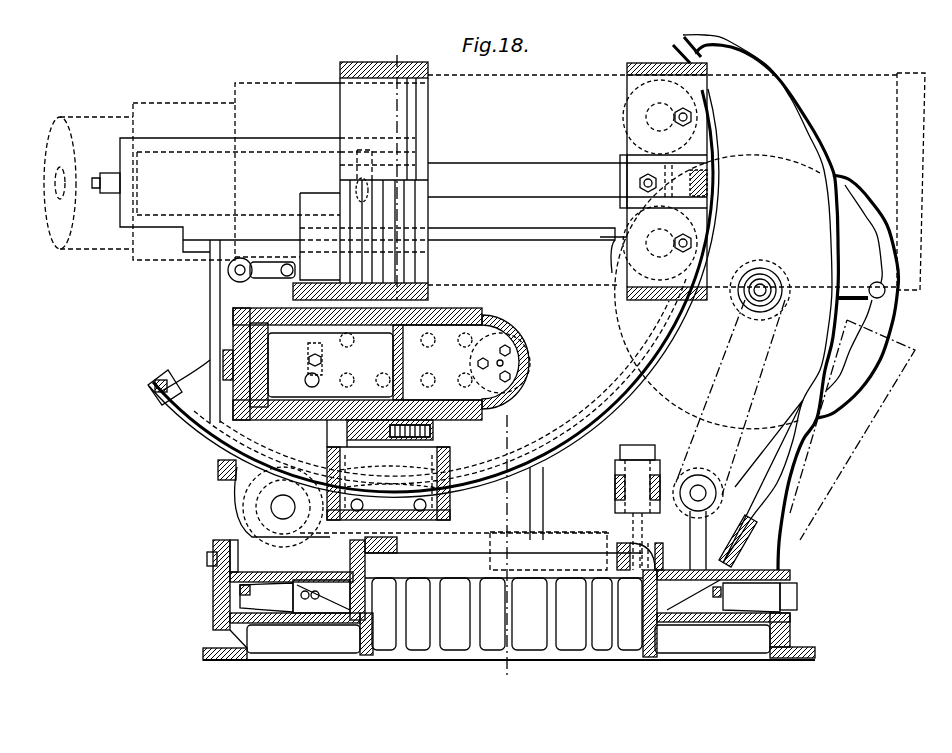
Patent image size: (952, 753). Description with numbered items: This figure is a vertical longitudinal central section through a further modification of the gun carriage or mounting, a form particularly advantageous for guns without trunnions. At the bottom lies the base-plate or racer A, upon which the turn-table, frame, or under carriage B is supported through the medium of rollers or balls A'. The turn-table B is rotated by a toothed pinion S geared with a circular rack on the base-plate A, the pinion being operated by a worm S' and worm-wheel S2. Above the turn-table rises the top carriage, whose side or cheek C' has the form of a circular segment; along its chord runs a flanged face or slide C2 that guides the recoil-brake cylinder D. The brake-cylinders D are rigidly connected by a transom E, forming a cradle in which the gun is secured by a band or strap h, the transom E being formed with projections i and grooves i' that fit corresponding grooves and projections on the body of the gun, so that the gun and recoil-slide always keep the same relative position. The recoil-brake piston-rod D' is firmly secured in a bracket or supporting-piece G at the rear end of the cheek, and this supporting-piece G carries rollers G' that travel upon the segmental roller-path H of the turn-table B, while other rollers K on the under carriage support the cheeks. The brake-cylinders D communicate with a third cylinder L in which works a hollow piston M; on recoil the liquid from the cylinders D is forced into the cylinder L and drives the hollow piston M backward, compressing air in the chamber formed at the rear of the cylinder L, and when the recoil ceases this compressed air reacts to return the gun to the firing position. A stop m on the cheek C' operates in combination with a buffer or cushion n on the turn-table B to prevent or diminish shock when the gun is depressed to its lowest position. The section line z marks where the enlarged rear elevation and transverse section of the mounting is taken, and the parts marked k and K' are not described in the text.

The recoil-brake cylinder D is at (216, 280).
The recoil-brake piston-rod D' is at (527, 181).
The transom E is at (364, 236).
The strap h is at (360, 181).
The section line z is at (452, 366).
The supporting-piece G is at (667, 168).
The roller G' is at (656, 180).
The flanged face or slide C2 is at (527, 250).
The cheek C' is at (404, 378).
The adjusting bolt k is at (305, 359).
The hollow piston M is at (374, 361).
The third cylinder L is at (401, 375).
The segmental roller-path H is at (434, 293).
The stop m is at (179, 404).
The buffer or cushion n is at (216, 470).
The roller K is at (282, 507).
The spring box K' is at (467, 508).
The worm-wheel S2 is at (616, 507).
The worm S' is at (700, 511).
The toothed pinion S is at (652, 556).
The turn-table B is at (498, 586).
The base-plate or racer A is at (509, 606).
The roller A' is at (518, 596).
The projection i is at (366, 231).
The groove i' is at (385, 230).